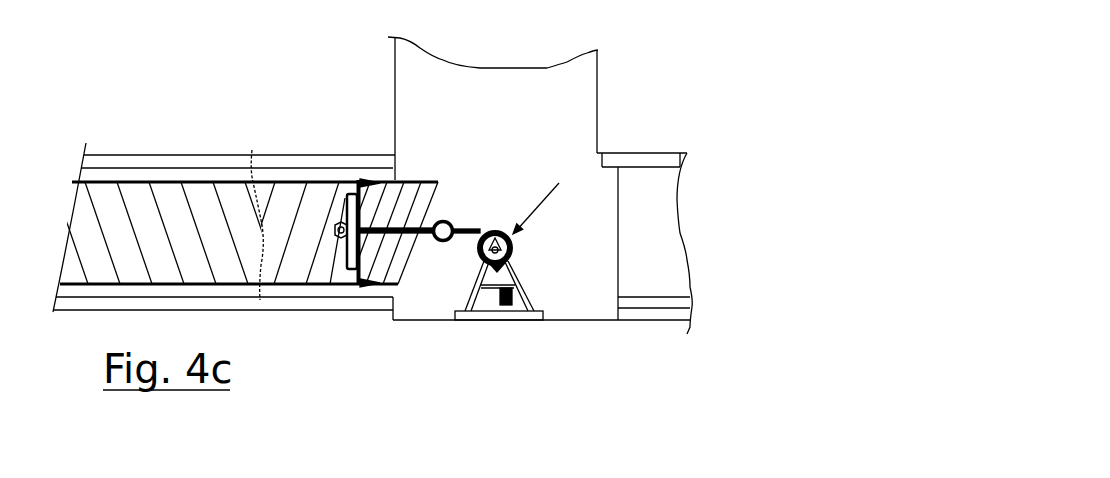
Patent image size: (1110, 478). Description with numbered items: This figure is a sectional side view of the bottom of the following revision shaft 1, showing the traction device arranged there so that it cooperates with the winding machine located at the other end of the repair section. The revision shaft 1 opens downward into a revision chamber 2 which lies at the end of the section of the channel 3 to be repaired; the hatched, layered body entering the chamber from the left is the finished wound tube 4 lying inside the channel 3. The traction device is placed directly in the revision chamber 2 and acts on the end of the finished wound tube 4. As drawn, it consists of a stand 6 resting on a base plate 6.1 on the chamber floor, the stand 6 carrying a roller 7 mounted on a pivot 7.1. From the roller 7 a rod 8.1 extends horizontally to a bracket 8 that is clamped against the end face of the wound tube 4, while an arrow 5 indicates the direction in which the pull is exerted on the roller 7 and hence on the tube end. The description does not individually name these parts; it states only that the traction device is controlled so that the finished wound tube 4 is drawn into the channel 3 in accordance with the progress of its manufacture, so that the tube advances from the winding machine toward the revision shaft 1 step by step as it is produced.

The revision shaft 1 is at (563, 117).
The revision chamber 2 is at (584, 254).
The channel 3 is at (172, 157).
The finished wound tube 4 is at (131, 245).
The direction of movement 5 is at (542, 195).
The support stand 6 is at (476, 278).
The base plate 6.1 is at (525, 286).
The roller 7 is at (502, 233).
The joint 7.1 is at (457, 224).
The holding bracket 8 is at (337, 178).
The connecting rod 8.1 is at (414, 227).